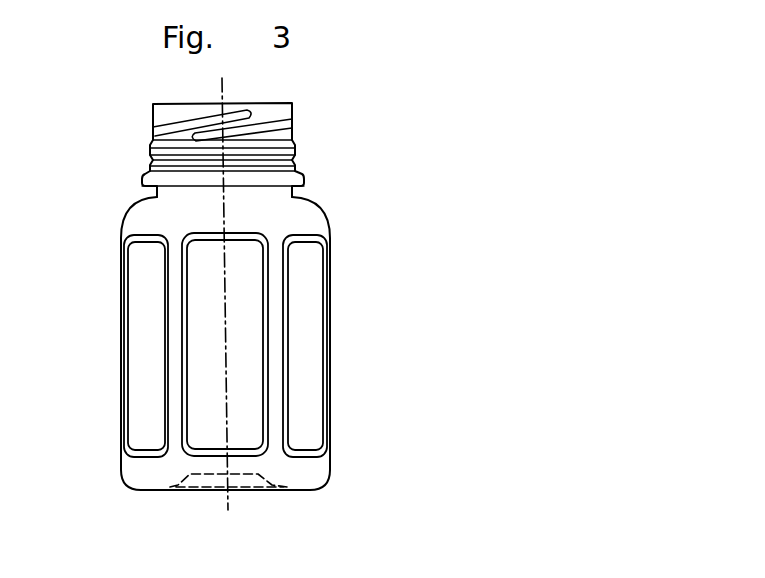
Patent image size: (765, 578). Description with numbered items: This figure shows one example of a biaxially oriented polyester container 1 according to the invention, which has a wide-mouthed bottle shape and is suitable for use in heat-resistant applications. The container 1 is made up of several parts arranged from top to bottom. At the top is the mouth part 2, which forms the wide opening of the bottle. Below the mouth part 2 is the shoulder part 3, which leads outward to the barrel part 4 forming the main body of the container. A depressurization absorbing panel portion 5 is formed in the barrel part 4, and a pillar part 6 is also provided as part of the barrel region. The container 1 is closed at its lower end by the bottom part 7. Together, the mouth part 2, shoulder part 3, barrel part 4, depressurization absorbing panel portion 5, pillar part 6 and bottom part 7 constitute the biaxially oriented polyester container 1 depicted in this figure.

The biaxially oriented polyester container 1 is at (259, 316).
The mouth part 2 is at (282, 132).
The shoulder part 3 is at (138, 202).
The barrel part 4 is at (330, 282).
The depressurization absorbing panel portion 5 is at (152, 318).
The pillar part 6 is at (277, 345).
The bottom part 7 is at (250, 490).